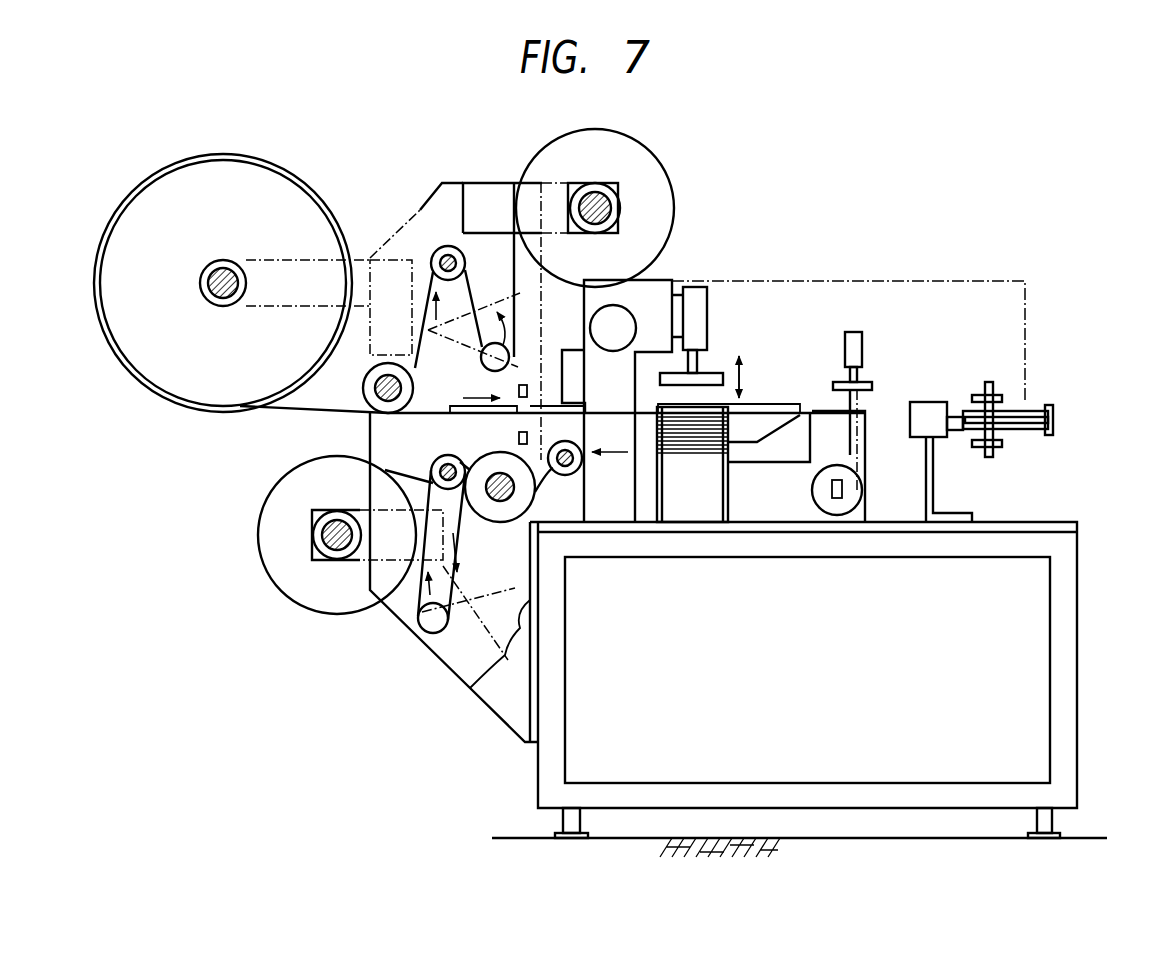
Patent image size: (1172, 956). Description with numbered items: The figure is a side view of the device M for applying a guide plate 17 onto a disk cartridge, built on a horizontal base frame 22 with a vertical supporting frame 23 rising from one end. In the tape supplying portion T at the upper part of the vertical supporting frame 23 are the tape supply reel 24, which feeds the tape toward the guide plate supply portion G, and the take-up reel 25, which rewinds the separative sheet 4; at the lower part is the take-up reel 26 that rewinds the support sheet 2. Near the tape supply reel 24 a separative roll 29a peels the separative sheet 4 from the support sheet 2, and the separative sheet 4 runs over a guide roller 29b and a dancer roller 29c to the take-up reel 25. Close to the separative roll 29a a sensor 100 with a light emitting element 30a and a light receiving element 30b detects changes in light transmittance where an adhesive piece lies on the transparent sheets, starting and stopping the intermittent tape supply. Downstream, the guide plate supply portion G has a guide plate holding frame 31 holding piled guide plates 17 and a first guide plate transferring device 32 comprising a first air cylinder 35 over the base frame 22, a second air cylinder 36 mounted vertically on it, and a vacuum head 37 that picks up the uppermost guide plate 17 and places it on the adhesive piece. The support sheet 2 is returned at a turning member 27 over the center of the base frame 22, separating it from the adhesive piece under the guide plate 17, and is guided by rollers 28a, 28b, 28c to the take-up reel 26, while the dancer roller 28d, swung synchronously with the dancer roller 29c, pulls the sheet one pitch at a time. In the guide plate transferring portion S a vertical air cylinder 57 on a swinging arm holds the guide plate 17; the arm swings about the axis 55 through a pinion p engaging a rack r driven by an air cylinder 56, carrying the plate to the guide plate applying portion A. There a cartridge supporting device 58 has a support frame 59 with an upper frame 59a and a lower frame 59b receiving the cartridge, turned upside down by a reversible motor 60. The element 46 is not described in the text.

The support sheet 2 is at (310, 412).
The separative sheet 4 is at (511, 257).
The guide plate 17 is at (688, 453).
The horizontal base frame 22 is at (1033, 523).
The vertical supporting frame 23 is at (432, 192).
The tape supply reel 24 is at (162, 170).
The take-up reel 25 is at (645, 145).
The take-up reel 26 is at (295, 607).
The turning member 27 is at (762, 435).
The roller 28a is at (573, 468).
The roller 28b is at (493, 513).
The roller 28c is at (433, 460).
The dancer roller 28d is at (430, 630).
The separative roll 29a is at (370, 373).
The guide roller 29b is at (433, 250).
The dancer roller 29c is at (482, 366).
The light emitting element 30a is at (528, 390).
The light receiving element 30b is at (527, 442).
The guide plate holding frame 31 is at (733, 483).
The first guide plate transferring device 32 is at (712, 274).
The first air cylinder 35 is at (600, 320).
The second air cylinder 36 is at (708, 322).
The vacuum head 37 is at (713, 367).
The rotary member 46 is at (837, 518).
The swinging axis 55 is at (852, 453).
The air cylinder 56 is at (845, 487).
The vertical air cylinder 57 is at (845, 348).
The cartridge supporting device 58 is at (997, 352).
The support frame 59 is at (963, 409).
The upper frame 59a is at (1032, 408).
The lower frame 59b is at (1032, 438).
The reversible motor 60 is at (932, 402).
The sensor 100 is at (516, 422).
The guide plate supply portion G is at (712, 499).
The device M is at (812, 174).
The guide plate transferring portion S is at (882, 366).
The tape supplying portion T is at (290, 140).
The guide plate applying portion A is at (1073, 403).
The pinion p is at (850, 498).
The rack r is at (830, 487).